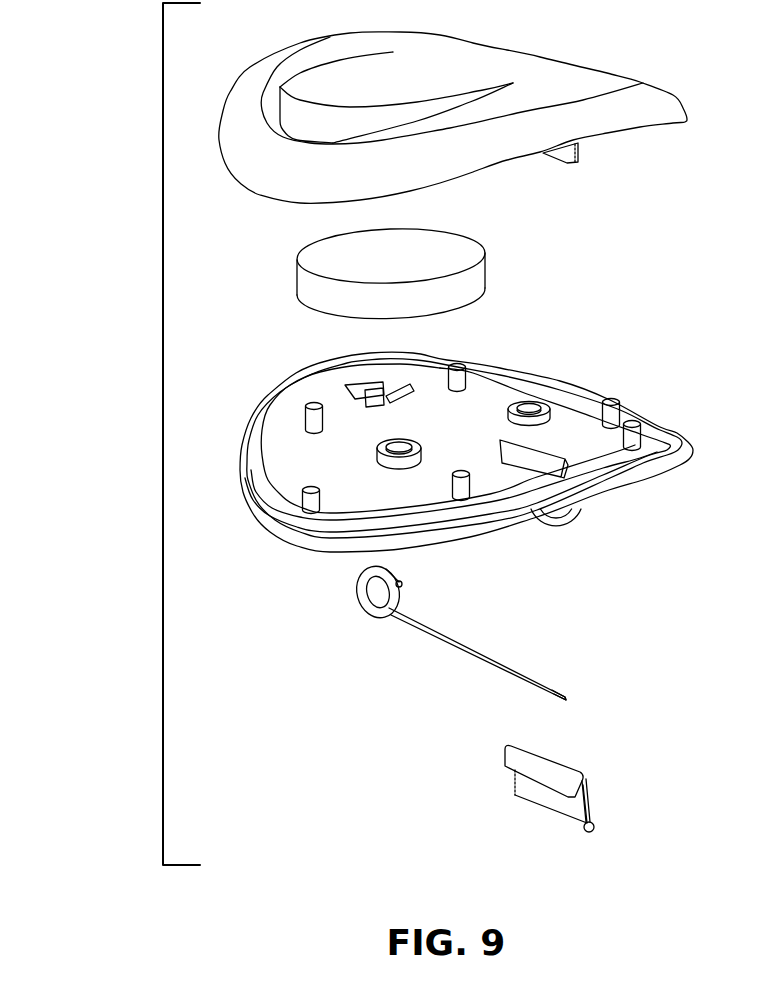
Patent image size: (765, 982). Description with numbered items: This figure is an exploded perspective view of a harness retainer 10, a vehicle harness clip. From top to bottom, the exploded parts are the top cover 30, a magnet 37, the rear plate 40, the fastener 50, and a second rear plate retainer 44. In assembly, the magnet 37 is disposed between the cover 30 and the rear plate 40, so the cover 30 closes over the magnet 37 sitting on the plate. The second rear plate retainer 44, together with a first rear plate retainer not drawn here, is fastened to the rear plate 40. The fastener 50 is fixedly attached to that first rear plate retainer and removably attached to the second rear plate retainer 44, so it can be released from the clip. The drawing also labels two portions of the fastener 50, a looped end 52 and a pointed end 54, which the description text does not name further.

The harness retainer 10 is at (70, 103).
The top cover 30 is at (237, 167).
The magnet 37 is at (312, 297).
The rear plate 40 is at (265, 509).
The second rear plate retainer 44 is at (518, 789).
The fastener 50 is at (439, 649).
The loop 52 is at (367, 602).
The pointed tip 54 is at (555, 698).